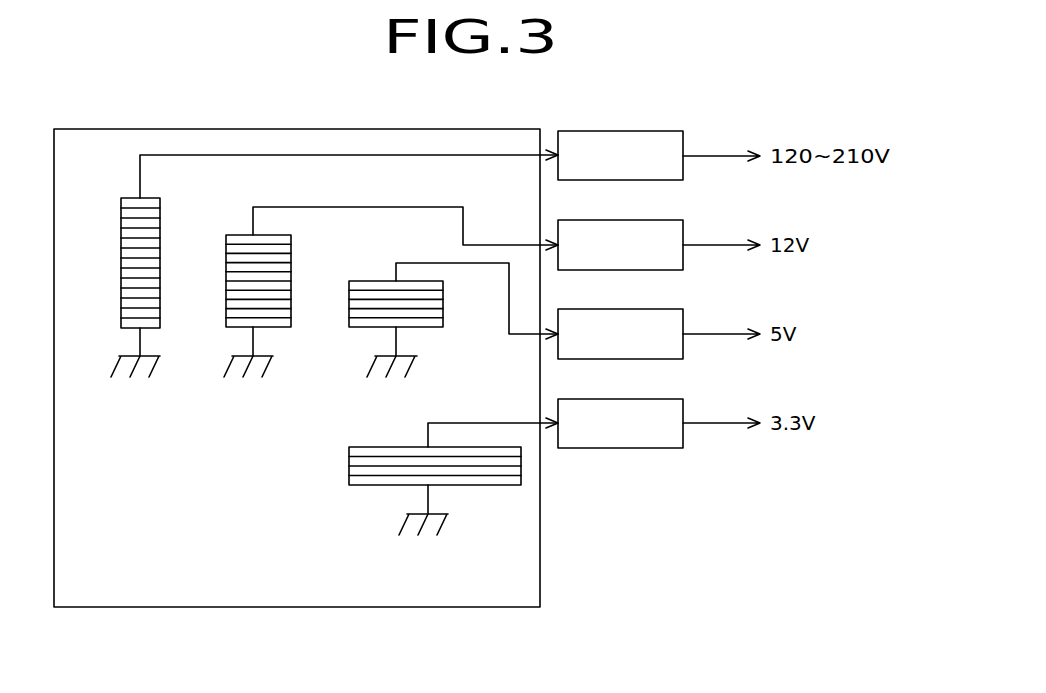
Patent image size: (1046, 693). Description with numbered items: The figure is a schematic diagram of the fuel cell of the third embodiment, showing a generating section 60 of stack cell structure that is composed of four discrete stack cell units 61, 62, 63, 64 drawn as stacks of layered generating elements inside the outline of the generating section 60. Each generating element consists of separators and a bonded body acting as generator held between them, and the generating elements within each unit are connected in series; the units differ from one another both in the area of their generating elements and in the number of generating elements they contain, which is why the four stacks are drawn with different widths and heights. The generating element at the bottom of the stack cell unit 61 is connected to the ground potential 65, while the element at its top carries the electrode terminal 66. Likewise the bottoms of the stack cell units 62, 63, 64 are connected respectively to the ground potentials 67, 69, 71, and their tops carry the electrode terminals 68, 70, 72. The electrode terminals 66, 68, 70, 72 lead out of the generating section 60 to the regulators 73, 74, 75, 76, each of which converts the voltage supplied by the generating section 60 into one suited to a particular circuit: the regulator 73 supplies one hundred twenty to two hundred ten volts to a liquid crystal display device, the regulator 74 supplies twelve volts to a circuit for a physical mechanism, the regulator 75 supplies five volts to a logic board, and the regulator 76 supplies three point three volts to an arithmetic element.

The generating section 60 is at (152, 623).
The stack cell unit 61 is at (129, 386).
The stack cell unit 62 is at (242, 386).
The stack cell unit 63 is at (385, 386).
The stack cell unit 64 is at (417, 544).
The ground potential 65 is at (110, 372).
The electrode terminal 66 is at (142, 186).
The ground potential 67 is at (223, 372).
The electrode terminal 68 is at (255, 222).
The ground potential 69 is at (366, 372).
The electrode terminal 70 is at (394, 268).
The ground potential 71 is at (398, 530).
The electrode terminal 72 is at (431, 432).
The regulator 73 is at (657, 130).
The regulator 74 is at (657, 219).
The regulator 75 is at (657, 308).
The regulator 76 is at (657, 398).